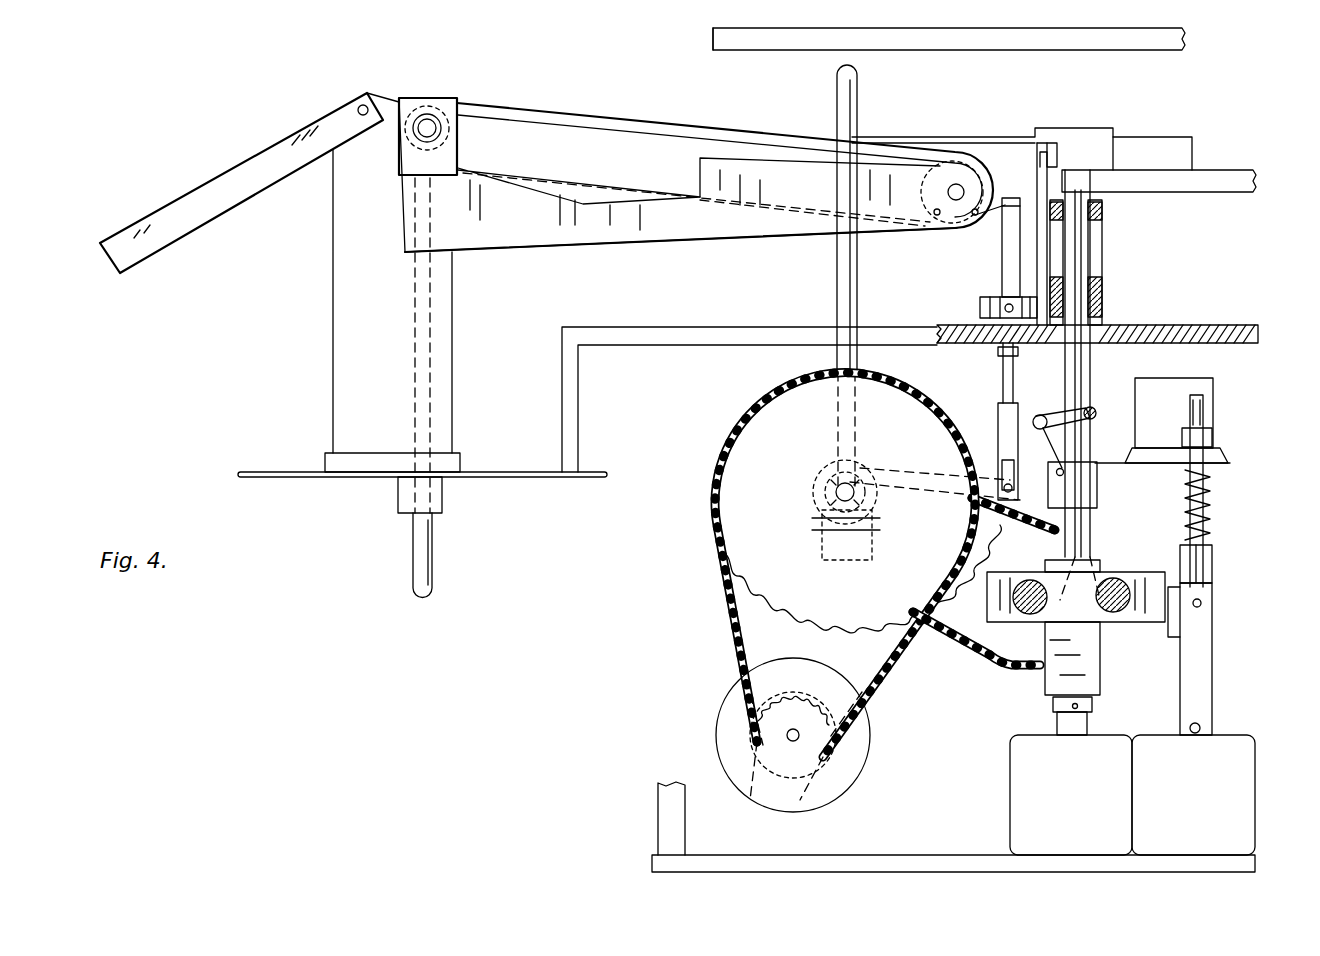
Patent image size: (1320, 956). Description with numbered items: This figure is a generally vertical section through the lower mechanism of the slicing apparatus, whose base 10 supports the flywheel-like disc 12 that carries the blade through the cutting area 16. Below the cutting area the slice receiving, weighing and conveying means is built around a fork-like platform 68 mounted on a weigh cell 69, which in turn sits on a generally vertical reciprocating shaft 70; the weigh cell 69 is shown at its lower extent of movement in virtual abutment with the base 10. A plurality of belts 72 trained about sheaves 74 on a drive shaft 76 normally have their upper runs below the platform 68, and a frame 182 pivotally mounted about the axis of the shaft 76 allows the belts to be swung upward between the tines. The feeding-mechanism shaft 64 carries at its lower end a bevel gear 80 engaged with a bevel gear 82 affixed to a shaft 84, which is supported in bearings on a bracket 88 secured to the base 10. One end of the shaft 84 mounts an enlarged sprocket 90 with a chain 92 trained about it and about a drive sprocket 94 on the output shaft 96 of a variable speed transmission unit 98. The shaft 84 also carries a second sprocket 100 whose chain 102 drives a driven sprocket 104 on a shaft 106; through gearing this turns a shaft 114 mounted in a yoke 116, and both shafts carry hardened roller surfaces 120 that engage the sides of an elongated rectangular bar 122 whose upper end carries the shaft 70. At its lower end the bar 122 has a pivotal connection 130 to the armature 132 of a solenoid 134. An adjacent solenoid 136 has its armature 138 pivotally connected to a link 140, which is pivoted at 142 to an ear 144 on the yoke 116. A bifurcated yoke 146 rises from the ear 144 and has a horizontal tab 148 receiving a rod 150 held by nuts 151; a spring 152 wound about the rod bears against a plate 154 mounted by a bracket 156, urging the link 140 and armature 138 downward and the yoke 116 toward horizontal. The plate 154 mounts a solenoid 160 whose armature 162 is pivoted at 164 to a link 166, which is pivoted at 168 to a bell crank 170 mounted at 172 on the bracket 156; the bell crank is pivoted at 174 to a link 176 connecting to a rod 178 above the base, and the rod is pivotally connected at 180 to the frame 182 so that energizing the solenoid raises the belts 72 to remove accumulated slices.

The base 10 is at (1215, 326).
The flywheel-like disc 12 is at (706, 46).
The cutting area 16 is at (1000, 18).
The shaft 64 is at (838, 352).
The fork-like platform 68 is at (930, 138).
The weigh cell 69 is at (1243, 168).
The reciprocating shaft 70 is at (1078, 357).
The belts 72 is at (490, 108).
The sheaves 74 is at (458, 126).
The drive shaft 76 is at (427, 120).
The bevel gear 80 is at (820, 530).
The bevel gear 82 is at (870, 470).
The shaft 84 is at (832, 490).
The bracket 88 is at (830, 562).
The enlarged sprocket 90 is at (745, 598).
The chain 92 is at (738, 657).
The drive sprocket 94 is at (788, 755).
The output shaft 96 is at (787, 735).
The variable speed transmission unit 98 is at (817, 803).
The second sprocket 100 is at (822, 460).
The chain 102 is at (945, 640).
The driven sprocket 104 is at (978, 660).
The shaft 106 is at (1030, 585).
The shaft 114 is at (1115, 615).
The yoke 116 is at (1130, 578).
The hardened roller surfaces 120 is at (1095, 560).
The bar 122 is at (1100, 667).
The pivotal connection 130 is at (1060, 710).
The armature 132 is at (1072, 735).
The solenoid 134 is at (1100, 820).
The solenoid 136 is at (1215, 798).
The armature 138 is at (1208, 728).
The link 140 is at (1214, 676).
The pivot 142 is at (1205, 606).
The ear 144 is at (1212, 634).
The bifurcated yoke 146 is at (1214, 583).
The horizontal tab 148 is at (1200, 572).
The rod 150 is at (1212, 475).
The nuts 151 is at (1205, 540).
The spring 152 is at (1212, 500).
The plate 154 is at (1223, 463).
The bracket 156 is at (1097, 497).
The solenoid 160 is at (1213, 380).
The armature 162 is at (1120, 418).
The pivotal connection 164 is at (1090, 411).
The link 166 is at (1046, 413).
The pivotal connection 168 is at (1037, 415).
The bell crank 170 is at (1040, 448).
The pivot 172 is at (1068, 478).
The pivotal connection 174 is at (935, 500).
The link 176 is at (1000, 417).
The rod 178 is at (1003, 270).
The pivotal connection 180 is at (985, 220).
The frame 182 is at (655, 235).